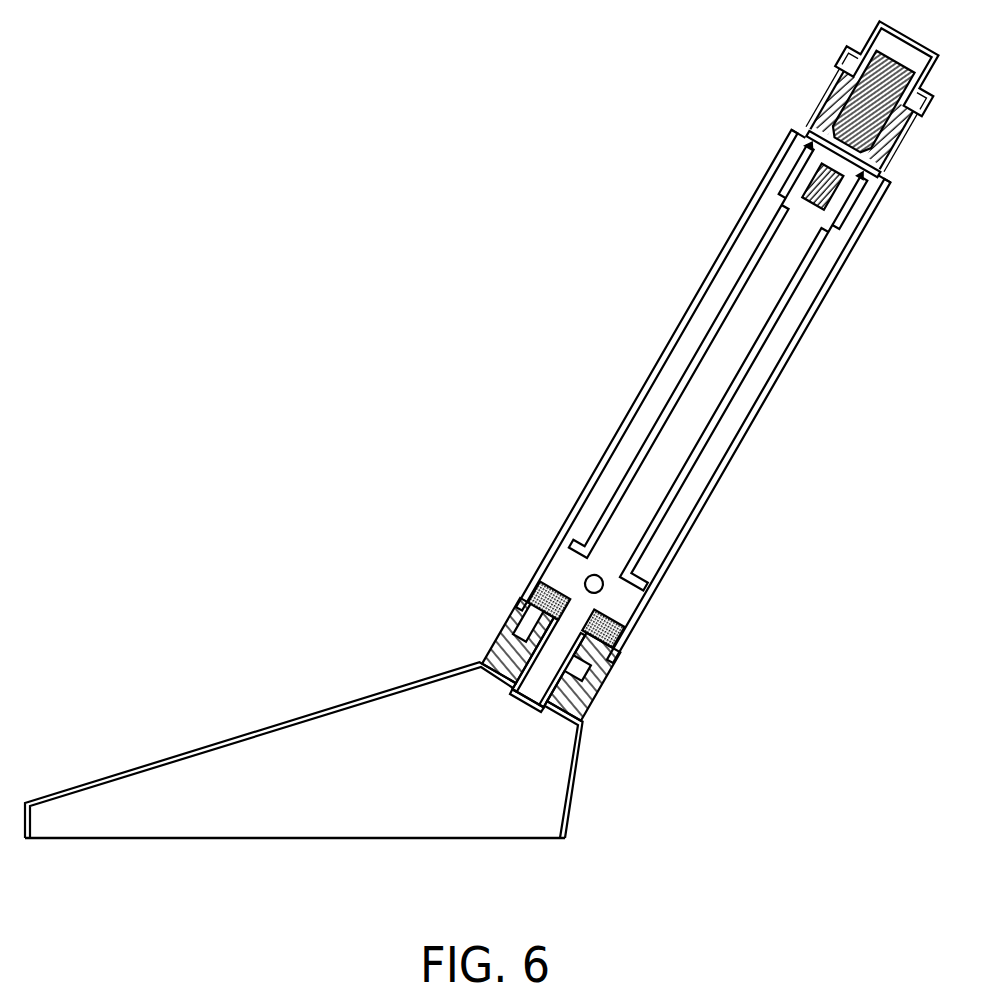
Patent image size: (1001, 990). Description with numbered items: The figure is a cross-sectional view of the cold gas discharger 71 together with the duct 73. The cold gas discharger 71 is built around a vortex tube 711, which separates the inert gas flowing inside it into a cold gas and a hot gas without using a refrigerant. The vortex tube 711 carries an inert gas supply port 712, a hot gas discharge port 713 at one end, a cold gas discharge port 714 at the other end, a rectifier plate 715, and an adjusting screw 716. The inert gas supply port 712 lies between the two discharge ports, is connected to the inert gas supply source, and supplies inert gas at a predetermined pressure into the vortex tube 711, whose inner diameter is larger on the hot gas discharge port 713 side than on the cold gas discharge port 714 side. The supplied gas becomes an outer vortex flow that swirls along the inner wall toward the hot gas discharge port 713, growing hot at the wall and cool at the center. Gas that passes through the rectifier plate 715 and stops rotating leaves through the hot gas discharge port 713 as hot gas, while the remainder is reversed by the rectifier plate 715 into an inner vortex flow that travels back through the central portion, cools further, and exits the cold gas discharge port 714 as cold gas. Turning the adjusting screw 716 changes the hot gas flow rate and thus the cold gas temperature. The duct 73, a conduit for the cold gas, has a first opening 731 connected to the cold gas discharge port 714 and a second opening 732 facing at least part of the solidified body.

The cold gas discharger 71 is at (674, 256).
The vortex tube 711 is at (657, 430).
The inert gas supply port 712 is at (583, 580).
The hot gas discharge port 713 is at (812, 132).
The cold gas discharge port 714 is at (535, 700).
The rectifier plate 715 is at (838, 187).
The adjusting screw 716 is at (872, 45).
The duct 73 is at (263, 728).
The first opening 731 is at (520, 709).
The second opening 732 is at (493, 840).